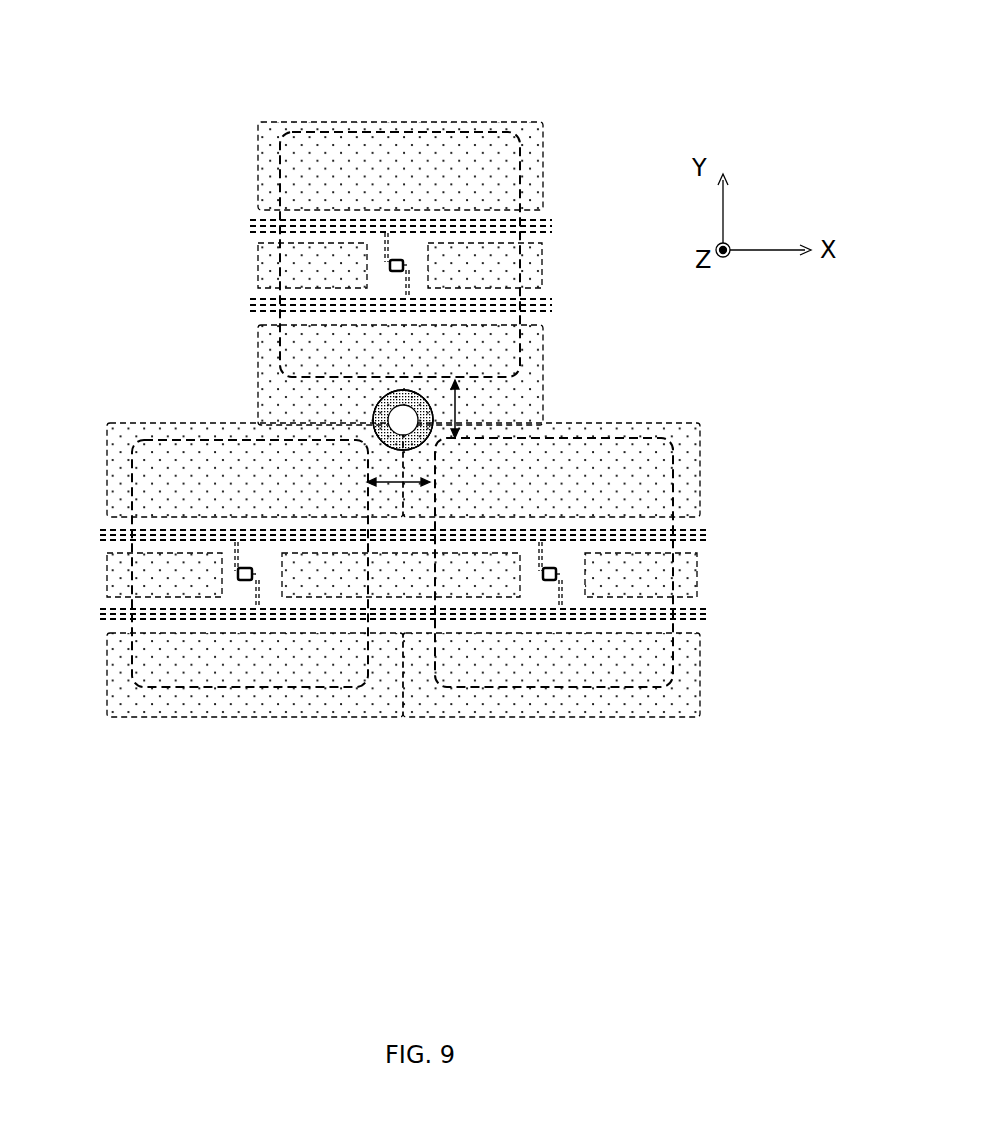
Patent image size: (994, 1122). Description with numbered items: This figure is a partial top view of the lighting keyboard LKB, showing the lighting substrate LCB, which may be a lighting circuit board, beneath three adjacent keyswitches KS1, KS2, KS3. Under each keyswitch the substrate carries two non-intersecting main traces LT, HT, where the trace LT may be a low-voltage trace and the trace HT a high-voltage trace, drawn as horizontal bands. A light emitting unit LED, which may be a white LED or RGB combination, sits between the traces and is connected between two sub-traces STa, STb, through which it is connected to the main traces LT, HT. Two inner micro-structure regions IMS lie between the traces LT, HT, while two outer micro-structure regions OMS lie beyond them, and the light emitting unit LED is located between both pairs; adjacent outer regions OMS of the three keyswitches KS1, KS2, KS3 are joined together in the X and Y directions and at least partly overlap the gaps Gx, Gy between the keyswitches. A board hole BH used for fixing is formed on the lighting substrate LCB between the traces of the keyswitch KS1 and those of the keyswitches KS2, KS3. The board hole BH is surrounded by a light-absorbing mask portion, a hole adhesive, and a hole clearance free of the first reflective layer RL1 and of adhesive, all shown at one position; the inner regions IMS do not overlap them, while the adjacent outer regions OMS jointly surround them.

The first light-emitting keyboard unit LKB is at (303, 60).
The lighting substrate LCB is at (637, 399).
The outer micro-structure region OMS is at (258, 165).
The inner micro-structure region IMS is at (460, 552).
The trace HT is at (552, 222).
The trace LT is at (545, 299).
The keyswitch KS1 is at (270, 257).
The keyswitch KS2 is at (193, 440).
The keyswitch KS3 is at (553, 433).
The light emitting unit LED is at (549, 582).
The trace STa is at (547, 559).
The trace STb is at (548, 582).
The board hole BH is at (396, 417).
The first reflective layer RL1 is at (373, 440).
The gap Gy is at (476, 409).
The gap Gx is at (398, 470).